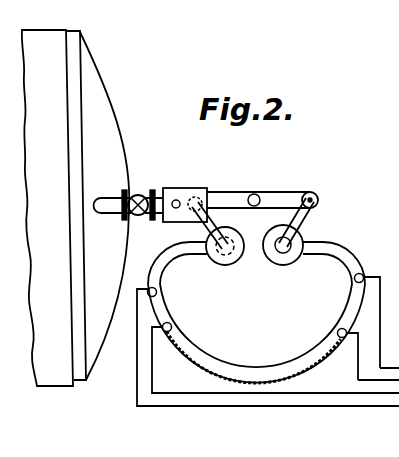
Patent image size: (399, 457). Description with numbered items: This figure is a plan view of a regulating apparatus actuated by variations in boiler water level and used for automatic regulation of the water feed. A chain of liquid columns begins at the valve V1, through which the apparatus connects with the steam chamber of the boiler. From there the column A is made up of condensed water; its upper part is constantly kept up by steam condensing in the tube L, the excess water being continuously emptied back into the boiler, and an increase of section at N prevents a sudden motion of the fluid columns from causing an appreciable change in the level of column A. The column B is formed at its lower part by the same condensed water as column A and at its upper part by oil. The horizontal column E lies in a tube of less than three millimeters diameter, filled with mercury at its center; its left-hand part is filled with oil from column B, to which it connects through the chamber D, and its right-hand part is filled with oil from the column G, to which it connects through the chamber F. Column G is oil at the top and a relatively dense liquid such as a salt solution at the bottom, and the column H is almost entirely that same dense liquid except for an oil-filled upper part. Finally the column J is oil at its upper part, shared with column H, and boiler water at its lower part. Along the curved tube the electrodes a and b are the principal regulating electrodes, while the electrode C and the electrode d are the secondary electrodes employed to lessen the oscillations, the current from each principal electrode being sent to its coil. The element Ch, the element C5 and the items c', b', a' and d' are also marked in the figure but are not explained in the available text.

The chamber wall / panel Ch is at (75, 208).
The valve V1 is at (140, 190).
The column A is at (176, 221).
The tube L is at (176, 199).
The increase of section N is at (190, 189).
The column J is at (248, 190).
The column H is at (318, 197).
The column B is at (213, 260).
The chamber D is at (230, 266).
The column G is at (297, 258).
The chamber F is at (283, 266).
The horizontal column E is at (208, 364).
The secondary electrode C is at (157, 296).
The principal regulating electrode b is at (185, 328).
The secondary electrode d is at (345, 289).
The principal regulating electrode a is at (325, 335).
The conductor c' is at (268, 419).
The conductor b' is at (275, 413).
The conductor a' is at (372, 406).
The conductor d' is at (386, 400).
The cylinder C5 is at (386, 147).